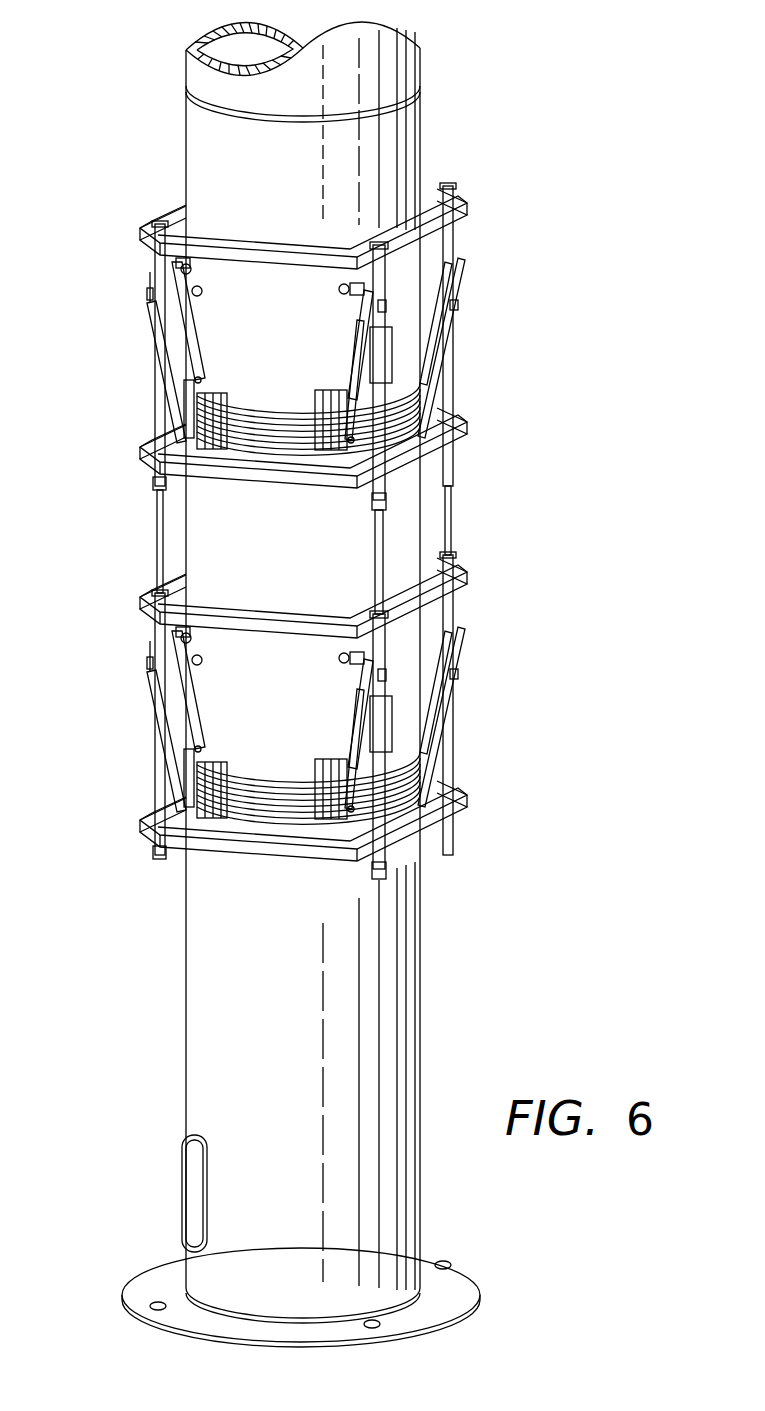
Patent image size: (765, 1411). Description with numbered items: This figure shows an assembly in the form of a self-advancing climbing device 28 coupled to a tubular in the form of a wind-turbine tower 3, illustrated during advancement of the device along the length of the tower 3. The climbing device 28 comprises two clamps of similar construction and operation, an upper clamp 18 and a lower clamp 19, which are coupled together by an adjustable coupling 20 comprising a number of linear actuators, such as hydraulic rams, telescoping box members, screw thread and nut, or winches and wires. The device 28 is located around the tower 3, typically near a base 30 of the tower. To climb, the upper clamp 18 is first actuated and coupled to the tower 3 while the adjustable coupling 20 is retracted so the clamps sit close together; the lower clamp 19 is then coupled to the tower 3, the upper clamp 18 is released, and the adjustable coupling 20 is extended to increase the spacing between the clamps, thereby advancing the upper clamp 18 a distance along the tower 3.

The tower 3 is at (205, 1055).
The upper clamp 18 is at (468, 203).
The lower clamp 19 is at (460, 788).
The adjustable coupling 20 is at (158, 540).
The self-advancing climbing device 28 is at (345, 519).
The base 30 is at (129, 1226).